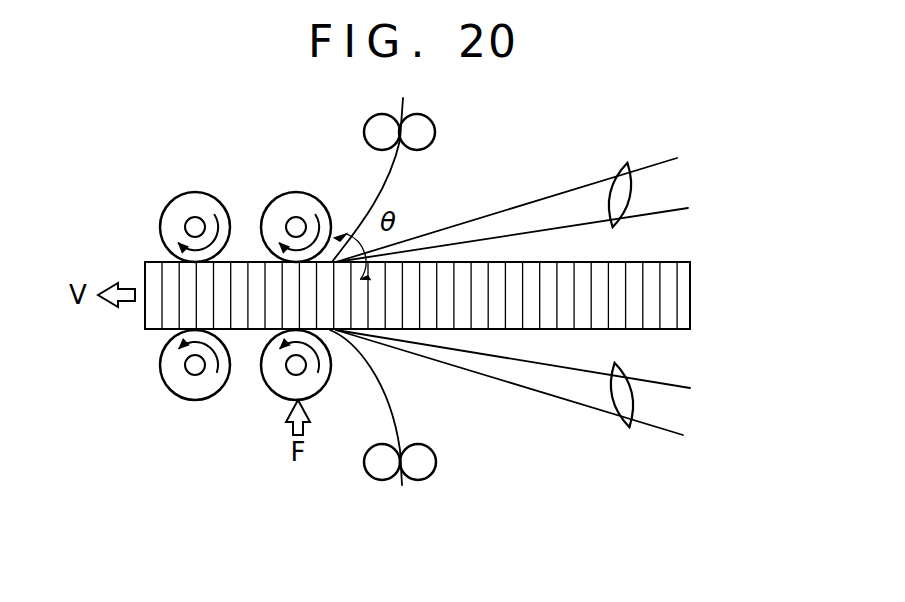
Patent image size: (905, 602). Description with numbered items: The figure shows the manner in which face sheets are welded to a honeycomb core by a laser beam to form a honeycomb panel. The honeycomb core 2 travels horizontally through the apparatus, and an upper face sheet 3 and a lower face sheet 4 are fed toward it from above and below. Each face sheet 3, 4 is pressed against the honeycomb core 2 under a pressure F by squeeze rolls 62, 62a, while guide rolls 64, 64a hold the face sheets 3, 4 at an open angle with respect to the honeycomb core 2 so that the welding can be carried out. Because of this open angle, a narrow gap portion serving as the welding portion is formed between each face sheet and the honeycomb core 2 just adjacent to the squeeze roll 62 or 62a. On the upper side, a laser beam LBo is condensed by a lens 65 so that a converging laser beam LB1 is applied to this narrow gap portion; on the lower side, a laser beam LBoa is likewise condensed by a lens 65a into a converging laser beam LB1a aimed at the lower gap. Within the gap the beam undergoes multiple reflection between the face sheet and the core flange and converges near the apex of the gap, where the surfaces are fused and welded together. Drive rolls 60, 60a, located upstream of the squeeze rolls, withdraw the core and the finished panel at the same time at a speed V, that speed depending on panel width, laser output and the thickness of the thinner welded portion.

The honeycomb core 2 is at (670, 290).
The drive roll 60 is at (162, 213).
The squeeze roll 62 is at (327, 210).
The drive roll 60a is at (168, 390).
The squeeze roll 62a is at (322, 383).
The guide roll 64 is at (368, 115).
The guide roll 64a is at (372, 470).
The face sheet 3 is at (397, 168).
The face sheet 4 is at (385, 380).
The converging laser beam LB1 is at (532, 200).
The laser beam LBo is at (662, 205).
The converging laser beam LB1a is at (483, 375).
The laser beam LBoa is at (667, 427).
The lens 65 is at (612, 162).
The lens 65a is at (615, 427).